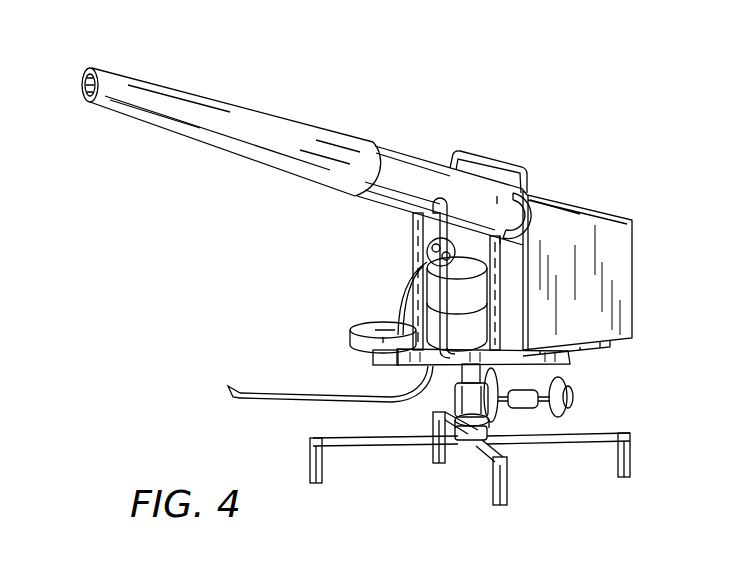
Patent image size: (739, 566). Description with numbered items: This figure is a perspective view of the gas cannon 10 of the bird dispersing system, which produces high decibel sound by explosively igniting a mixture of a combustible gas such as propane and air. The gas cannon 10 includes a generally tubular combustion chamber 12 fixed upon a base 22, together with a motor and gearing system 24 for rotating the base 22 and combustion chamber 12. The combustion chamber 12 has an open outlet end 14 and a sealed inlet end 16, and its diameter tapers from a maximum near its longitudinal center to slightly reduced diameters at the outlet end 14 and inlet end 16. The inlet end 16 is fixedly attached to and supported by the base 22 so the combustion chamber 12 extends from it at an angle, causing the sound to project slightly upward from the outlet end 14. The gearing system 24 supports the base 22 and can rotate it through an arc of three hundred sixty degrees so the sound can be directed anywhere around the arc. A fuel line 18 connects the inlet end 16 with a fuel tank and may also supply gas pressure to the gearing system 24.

The gas cannon 10 is at (186, 234).
The combustion chamber 12 is at (233, 100).
The outlet end 14 is at (82, 87).
The inlet end 16 is at (497, 197).
The fuel line 18 is at (281, 392).
The base 22 is at (572, 360).
The motor and gearing system 24 is at (572, 410).